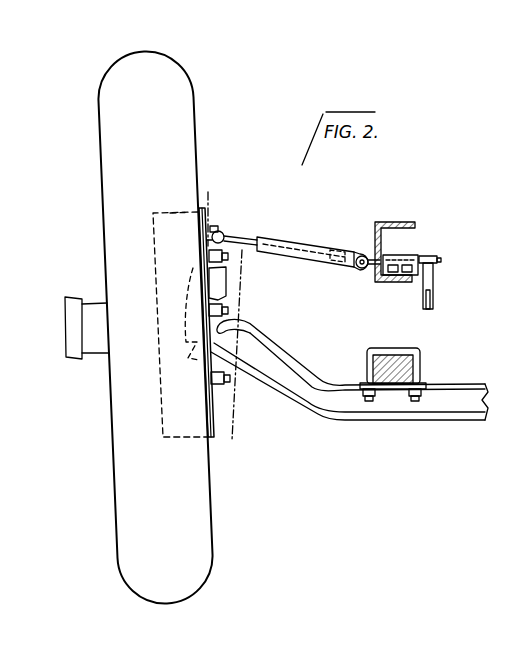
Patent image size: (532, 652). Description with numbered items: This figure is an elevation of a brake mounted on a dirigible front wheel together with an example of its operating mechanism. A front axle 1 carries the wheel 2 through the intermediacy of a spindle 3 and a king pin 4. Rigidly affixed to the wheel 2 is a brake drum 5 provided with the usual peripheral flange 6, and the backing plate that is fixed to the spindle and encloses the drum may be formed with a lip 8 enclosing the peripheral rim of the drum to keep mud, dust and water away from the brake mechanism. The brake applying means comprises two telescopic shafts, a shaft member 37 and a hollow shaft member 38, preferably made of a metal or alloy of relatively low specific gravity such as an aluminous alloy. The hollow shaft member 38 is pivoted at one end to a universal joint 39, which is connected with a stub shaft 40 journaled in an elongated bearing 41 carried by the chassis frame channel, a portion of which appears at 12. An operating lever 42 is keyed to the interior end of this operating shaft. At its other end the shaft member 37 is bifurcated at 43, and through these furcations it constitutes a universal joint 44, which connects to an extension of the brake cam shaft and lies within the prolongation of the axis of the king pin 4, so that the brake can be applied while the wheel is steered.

The front axle 1 is at (392, 406).
The wheel 2 is at (112, 208).
The spindle 3 is at (216, 199).
The king pin 4 is at (188, 360).
The brake drum 5 is at (168, 264).
The peripheral flange 6 is at (172, 210).
The lip 8 is at (217, 436).
The frame member 12 is at (508, 266).
The shaft member 37 is at (250, 238).
The hollow shaft member 38 is at (297, 240).
The universal joint 39 is at (364, 255).
The stub shaft 40 is at (423, 258).
The elongated bearing 41 is at (392, 278).
The operating lever 42 is at (437, 272).
The furcations 43 is at (223, 235).
The universal joint 44 is at (216, 228).